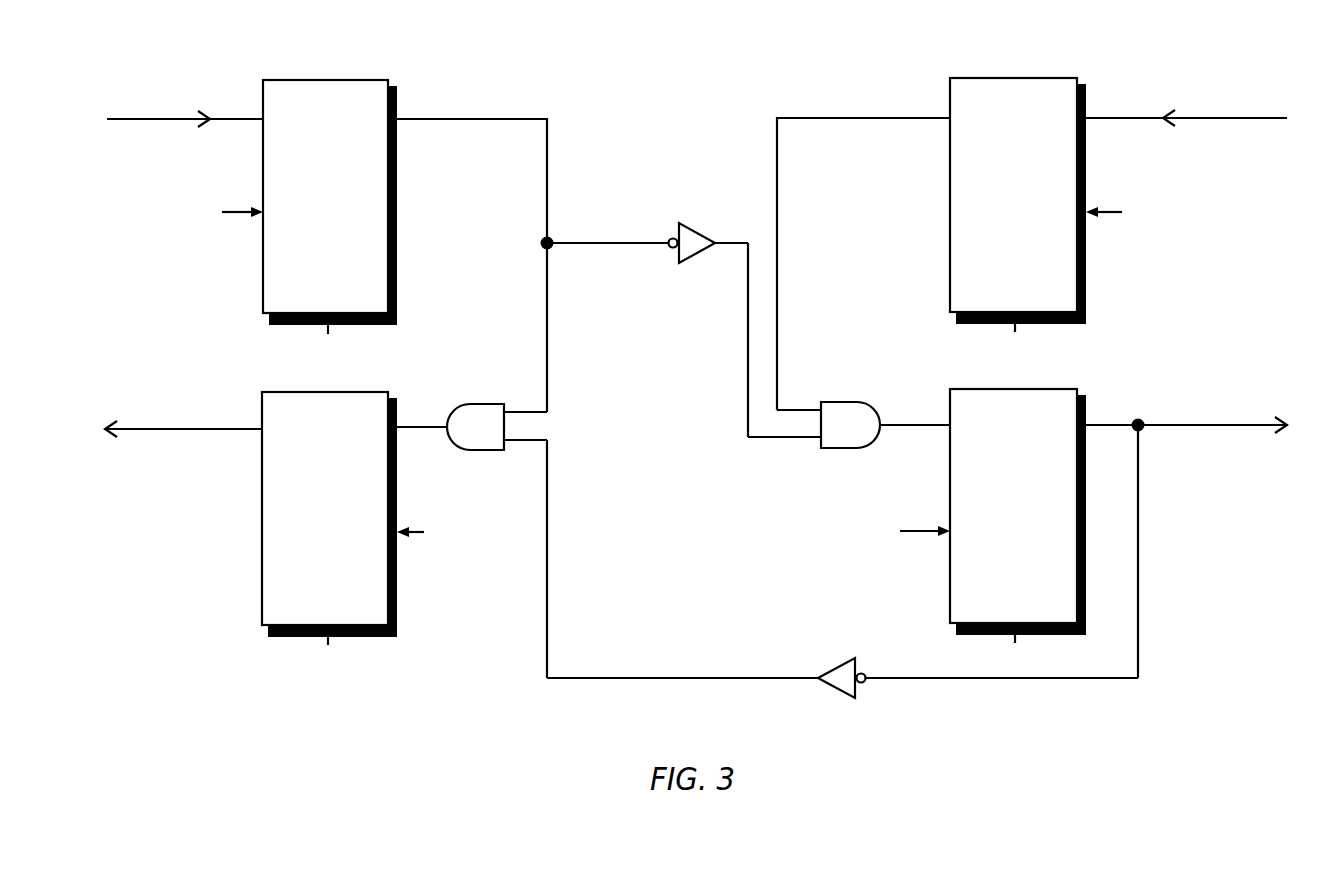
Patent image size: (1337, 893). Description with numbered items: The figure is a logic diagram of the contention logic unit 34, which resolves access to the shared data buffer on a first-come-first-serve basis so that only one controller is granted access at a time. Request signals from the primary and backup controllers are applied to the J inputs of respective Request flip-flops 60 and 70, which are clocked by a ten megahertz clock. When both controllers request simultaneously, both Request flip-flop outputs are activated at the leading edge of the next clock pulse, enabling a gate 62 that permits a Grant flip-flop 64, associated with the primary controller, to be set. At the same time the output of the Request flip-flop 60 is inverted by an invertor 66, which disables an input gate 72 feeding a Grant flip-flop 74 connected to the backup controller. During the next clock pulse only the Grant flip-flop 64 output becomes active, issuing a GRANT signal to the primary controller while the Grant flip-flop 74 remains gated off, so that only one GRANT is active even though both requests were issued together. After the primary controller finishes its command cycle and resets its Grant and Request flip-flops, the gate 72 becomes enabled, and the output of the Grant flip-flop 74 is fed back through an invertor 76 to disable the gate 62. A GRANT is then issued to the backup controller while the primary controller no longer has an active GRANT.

The contention logic unit 34 is at (748, 50).
The Request flip-flop 60 is at (388, 79).
The gate 62 is at (490, 404).
The Grant flip-flop 64 is at (400, 600).
The invertor 66 is at (696, 223).
The Request flip-flop 70 is at (1077, 78).
The input gate 72 is at (862, 402).
The Grant flip-flop 74 is at (950, 608).
The invertor 76 is at (826, 692).